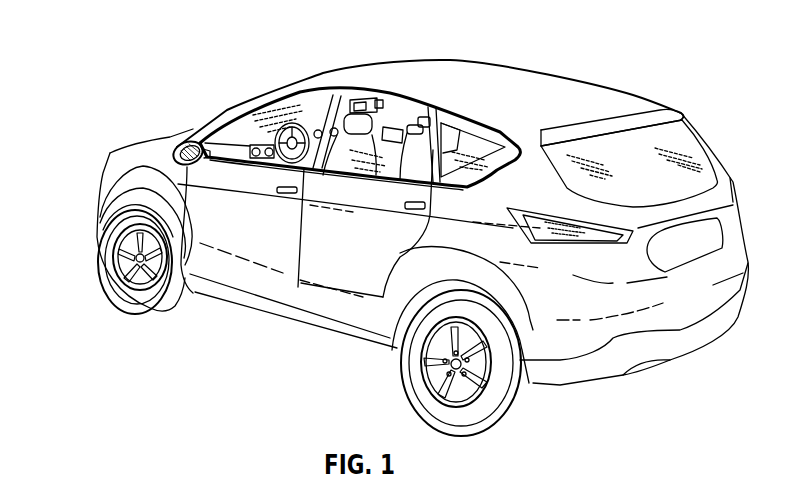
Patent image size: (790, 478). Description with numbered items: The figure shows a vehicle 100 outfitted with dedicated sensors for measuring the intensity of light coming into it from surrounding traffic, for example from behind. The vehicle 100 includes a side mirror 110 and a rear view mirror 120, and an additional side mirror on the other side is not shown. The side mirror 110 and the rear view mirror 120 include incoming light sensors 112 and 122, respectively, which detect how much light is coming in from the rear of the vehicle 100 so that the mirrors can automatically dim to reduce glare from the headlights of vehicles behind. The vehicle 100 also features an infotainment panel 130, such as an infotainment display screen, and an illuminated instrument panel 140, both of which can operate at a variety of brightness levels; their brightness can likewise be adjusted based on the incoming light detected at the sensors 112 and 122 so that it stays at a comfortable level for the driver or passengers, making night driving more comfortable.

The vehicle 100 is at (107, 58).
The side mirror 110 is at (199, 163).
The incoming light sensor 112 is at (184, 142).
The rear view mirror 120 is at (355, 102).
The incoming light sensor 122 is at (383, 99).
The infotainment panel 130 is at (423, 118).
The illuminated instrument panel 140 is at (317, 127).